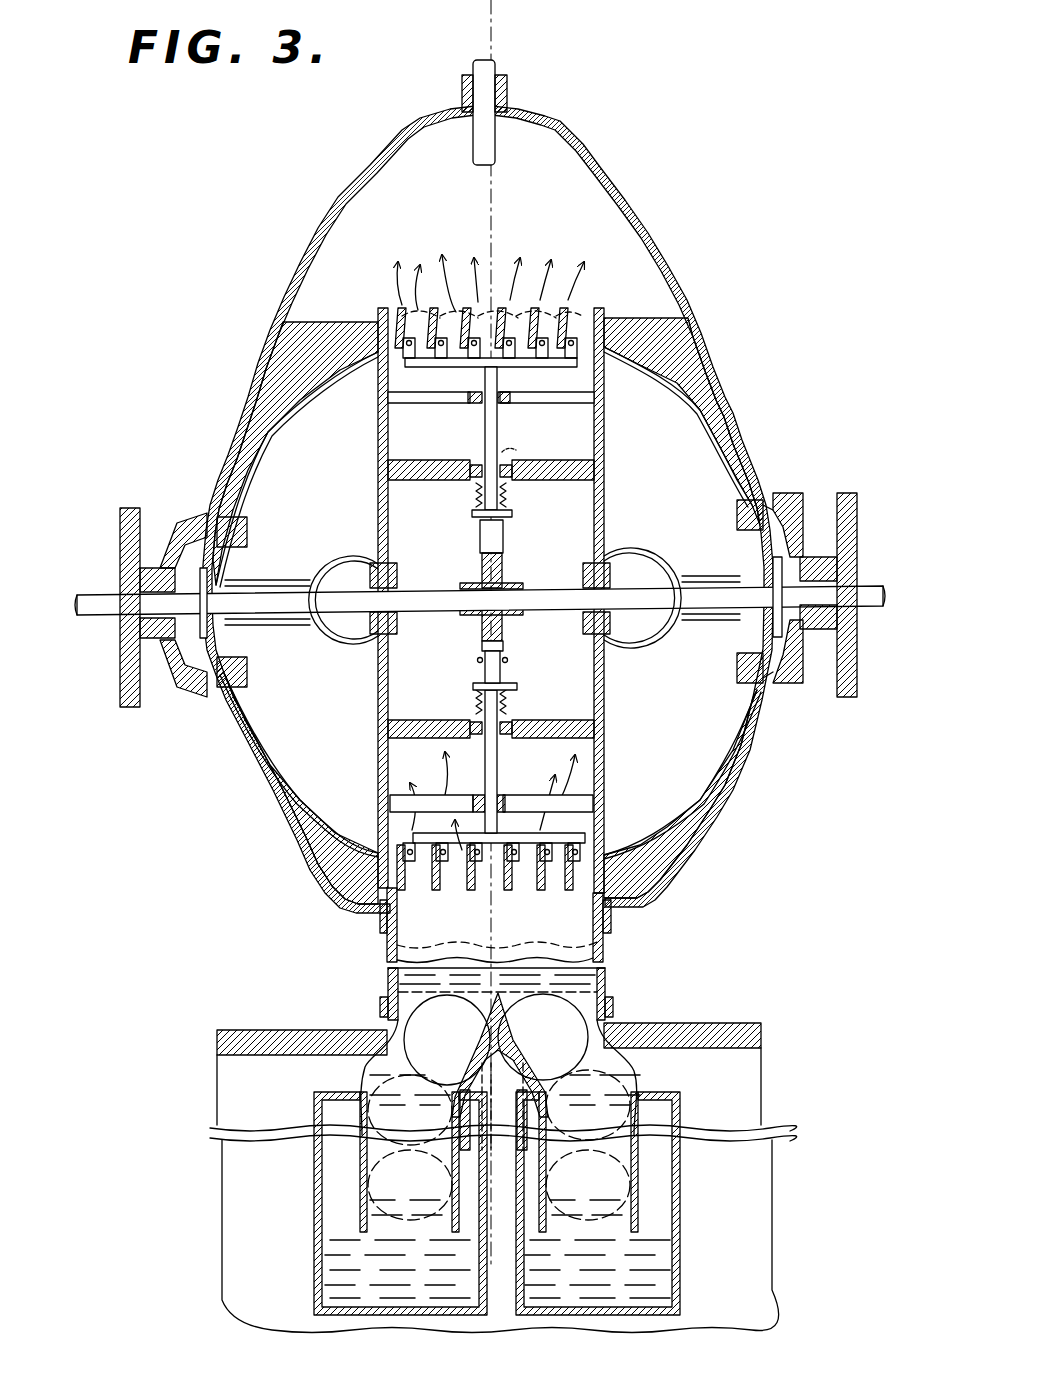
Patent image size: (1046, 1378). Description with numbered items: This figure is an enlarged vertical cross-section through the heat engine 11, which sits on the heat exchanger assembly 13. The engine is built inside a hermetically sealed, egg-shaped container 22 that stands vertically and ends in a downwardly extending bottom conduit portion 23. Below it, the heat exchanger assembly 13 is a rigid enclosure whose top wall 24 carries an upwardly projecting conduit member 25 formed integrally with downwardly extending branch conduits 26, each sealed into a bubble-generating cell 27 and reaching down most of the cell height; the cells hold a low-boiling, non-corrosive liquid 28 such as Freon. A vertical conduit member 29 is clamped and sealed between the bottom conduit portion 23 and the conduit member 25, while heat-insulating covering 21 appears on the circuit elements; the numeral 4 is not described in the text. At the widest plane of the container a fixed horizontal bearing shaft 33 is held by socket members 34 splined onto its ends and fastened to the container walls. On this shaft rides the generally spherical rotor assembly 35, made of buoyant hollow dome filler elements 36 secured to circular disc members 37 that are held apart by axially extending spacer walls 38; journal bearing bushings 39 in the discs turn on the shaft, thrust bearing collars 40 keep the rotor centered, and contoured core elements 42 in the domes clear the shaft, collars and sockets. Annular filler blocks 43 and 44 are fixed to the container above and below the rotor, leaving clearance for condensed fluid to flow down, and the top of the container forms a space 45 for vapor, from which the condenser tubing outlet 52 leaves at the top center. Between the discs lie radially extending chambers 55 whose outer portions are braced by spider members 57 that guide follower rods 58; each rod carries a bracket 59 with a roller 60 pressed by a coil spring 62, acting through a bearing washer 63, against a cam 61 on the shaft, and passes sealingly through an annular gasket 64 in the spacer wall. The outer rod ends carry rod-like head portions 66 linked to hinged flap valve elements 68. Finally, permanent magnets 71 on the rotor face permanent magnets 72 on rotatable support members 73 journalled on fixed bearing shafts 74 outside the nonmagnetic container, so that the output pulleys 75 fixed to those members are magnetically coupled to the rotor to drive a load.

The central pipe 4 is at (540, 1260).
The heat engine 11 is at (680, 187).
The heat exchanger assembly 13 is at (762, 1057).
The heat-insulating covering 21 is at (702, 1031).
The hermetically sealed container 22 is at (740, 398).
The bottom conduit portion 23 is at (406, 937).
The top wall 24 is at (266, 1056).
The upwardly projecting conduit member 25 is at (427, 1023).
The branch conduits 26 is at (362, 1192).
The bubble-generating cells 27 is at (314, 1227).
The liquid working fluid 28 is at (660, 1257).
The vertical conduit member 29 is at (606, 977).
The bearing shaft 33 is at (536, 590).
The socket members 34 is at (245, 582).
The rotor assembly 35 is at (740, 750).
The hollow dome filler elements 36 is at (265, 448).
The circular disc members 37 is at (600, 422).
The spacer walls 38 is at (453, 458).
The journal bearing bushings 39 is at (412, 622).
The thrust bearing collars 40 is at (612, 570).
The core elements 42 is at (661, 641).
The upper annular filler block 43 is at (692, 340).
The lower annular filler block 44 is at (662, 862).
The vapor space 45 is at (580, 225).
The condenser tubing outlet 52 is at (497, 67).
The radially extending chambers 55 is at (378, 432).
The spider members 57 is at (499, 450).
The follower rods 58 is at (486, 430).
The brackets 59 is at (505, 532).
The rollers 60 is at (478, 546).
The cam 61 is at (480, 640).
The coil springs 62 is at (475, 498).
The bearing washers 63 is at (510, 493).
The annular gaskets 64 is at (525, 448).
The rod-like head portions 66 is at (512, 368).
The flap valve elements 68 is at (460, 330).
The permanent magnets 71 is at (736, 677).
The permanent magnets 72 is at (786, 502).
The rotatable support members 73 is at (799, 692).
The fixed bearing shafts 74 is at (96, 605).
The output pulleys 75 is at (858, 525).